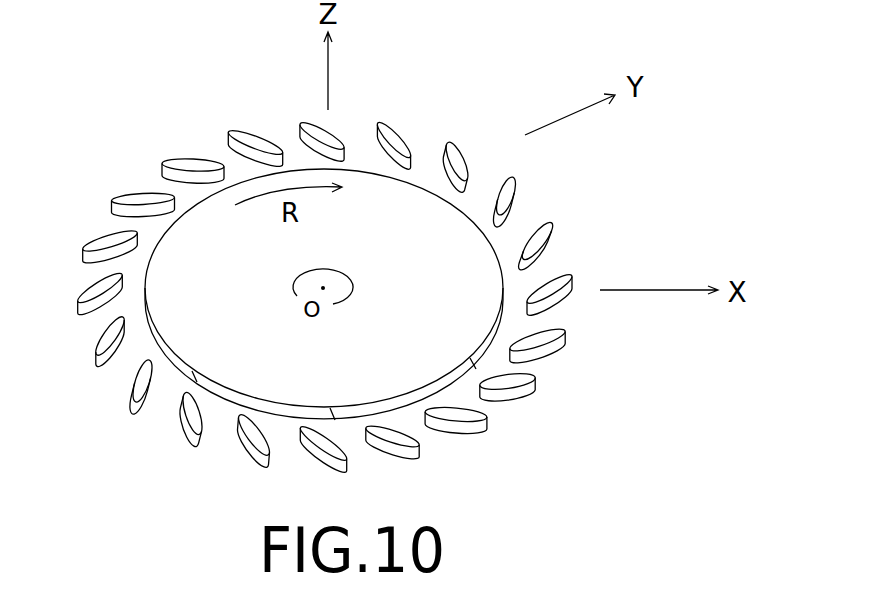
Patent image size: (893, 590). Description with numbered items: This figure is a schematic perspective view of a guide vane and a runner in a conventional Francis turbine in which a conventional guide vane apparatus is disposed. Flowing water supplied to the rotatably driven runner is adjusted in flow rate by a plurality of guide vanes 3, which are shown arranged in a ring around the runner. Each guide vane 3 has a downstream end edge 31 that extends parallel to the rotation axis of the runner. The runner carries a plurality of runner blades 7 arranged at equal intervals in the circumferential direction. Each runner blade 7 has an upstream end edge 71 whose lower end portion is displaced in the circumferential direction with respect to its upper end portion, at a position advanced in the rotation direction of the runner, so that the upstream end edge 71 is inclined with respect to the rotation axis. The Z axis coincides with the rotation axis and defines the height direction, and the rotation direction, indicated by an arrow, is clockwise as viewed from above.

The guide vane 3 is at (397, 448).
The runner blade 7 is at (202, 379).
The upstream end edge 71 is at (237, 402).
The downstream end edge 31 is at (517, 260).